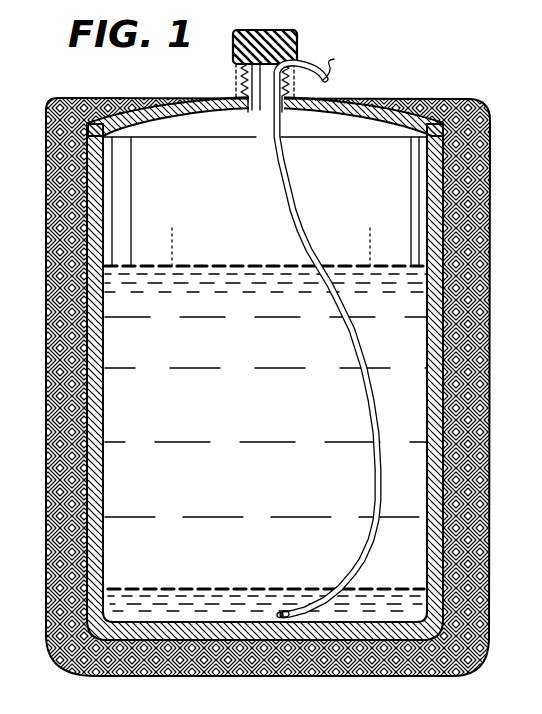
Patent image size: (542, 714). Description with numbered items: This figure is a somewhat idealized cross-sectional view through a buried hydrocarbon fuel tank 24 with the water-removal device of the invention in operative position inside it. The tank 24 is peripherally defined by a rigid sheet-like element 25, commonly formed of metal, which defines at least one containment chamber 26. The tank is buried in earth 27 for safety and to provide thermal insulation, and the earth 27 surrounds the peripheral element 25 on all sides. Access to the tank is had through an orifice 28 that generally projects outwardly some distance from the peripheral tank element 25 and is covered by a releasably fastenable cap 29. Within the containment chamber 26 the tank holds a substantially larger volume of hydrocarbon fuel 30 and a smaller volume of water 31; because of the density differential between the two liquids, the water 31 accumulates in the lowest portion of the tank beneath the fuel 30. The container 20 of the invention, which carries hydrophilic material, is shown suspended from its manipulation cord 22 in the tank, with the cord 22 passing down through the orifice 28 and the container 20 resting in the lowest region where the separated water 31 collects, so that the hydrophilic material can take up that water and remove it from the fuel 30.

The container 20 is at (228, 603).
The manipulation cord 22 is at (296, 178).
The tank 24 is at (74, 371).
The rigid sheet-like element 25 is at (89, 481).
The containment chamber 26 is at (377, 166).
The earth 27 is at (489, 150).
The orifice 28 is at (243, 76).
The releasably fastenable cap 29 is at (297, 35).
The hydrocarbon fuel 30 is at (255, 408).
The water 31 is at (168, 606).